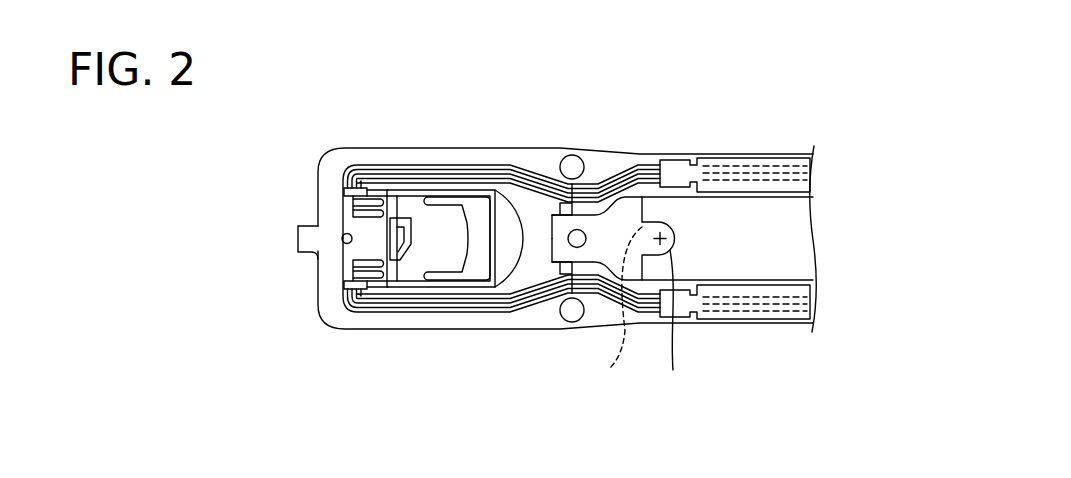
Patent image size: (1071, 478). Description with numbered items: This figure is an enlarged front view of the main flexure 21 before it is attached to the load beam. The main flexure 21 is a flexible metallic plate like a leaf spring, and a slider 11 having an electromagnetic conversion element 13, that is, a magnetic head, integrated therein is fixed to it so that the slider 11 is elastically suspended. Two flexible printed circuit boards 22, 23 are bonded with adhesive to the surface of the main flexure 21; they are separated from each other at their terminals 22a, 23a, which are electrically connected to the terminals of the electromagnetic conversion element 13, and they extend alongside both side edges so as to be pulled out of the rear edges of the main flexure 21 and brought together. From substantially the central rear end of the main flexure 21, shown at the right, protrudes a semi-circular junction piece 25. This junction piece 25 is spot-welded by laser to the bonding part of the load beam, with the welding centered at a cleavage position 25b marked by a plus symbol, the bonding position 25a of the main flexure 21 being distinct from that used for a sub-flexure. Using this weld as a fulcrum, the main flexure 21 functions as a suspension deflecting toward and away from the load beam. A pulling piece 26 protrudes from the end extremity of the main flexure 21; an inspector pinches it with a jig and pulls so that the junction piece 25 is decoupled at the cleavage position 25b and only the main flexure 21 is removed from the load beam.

The slider 11 is at (408, 208).
The electromagnetic conversion element 13 is at (390, 236).
The main flexure 21 is at (496, 158).
The flexible printed circuit board 22 is at (735, 168).
The terminal 22a is at (345, 194).
The flexible printed circuit board 23 is at (752, 310).
The second terminal portion 23a is at (345, 266).
The junction piece 25 is at (652, 222).
The bonding position 25a is at (678, 326).
The cleavage position 25b is at (612, 315).
The pulling piece 26 is at (297, 238).